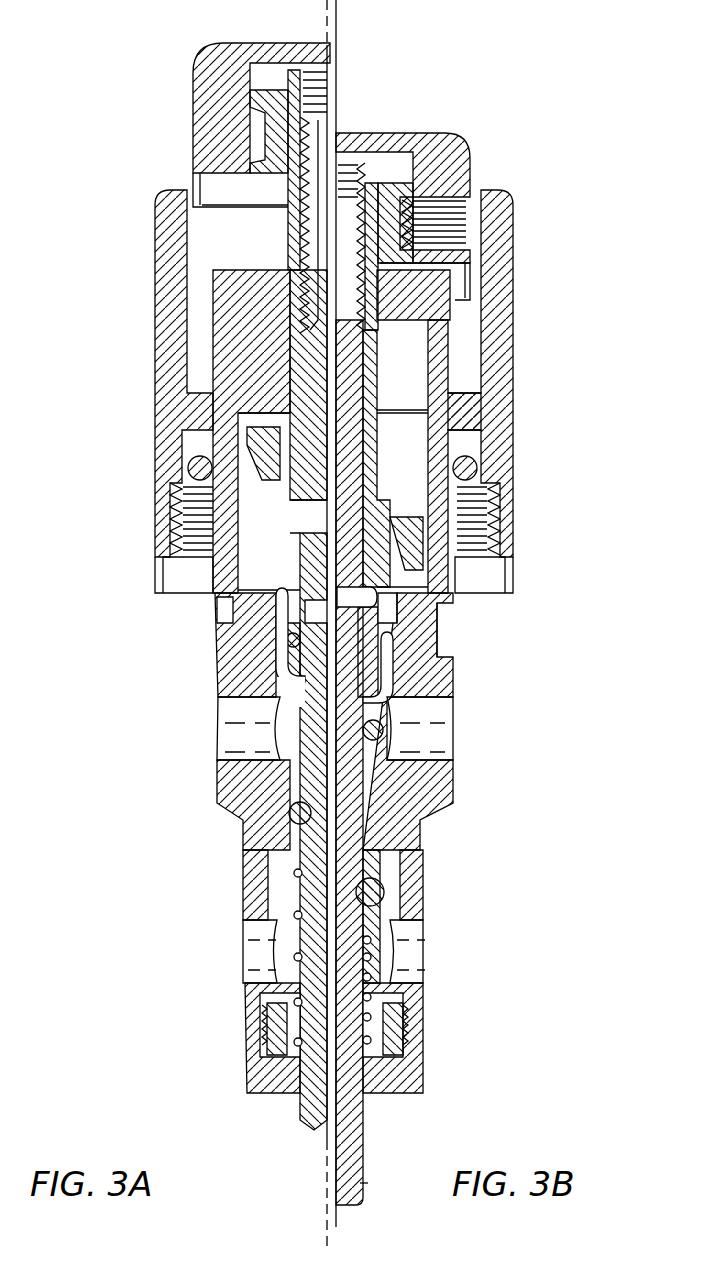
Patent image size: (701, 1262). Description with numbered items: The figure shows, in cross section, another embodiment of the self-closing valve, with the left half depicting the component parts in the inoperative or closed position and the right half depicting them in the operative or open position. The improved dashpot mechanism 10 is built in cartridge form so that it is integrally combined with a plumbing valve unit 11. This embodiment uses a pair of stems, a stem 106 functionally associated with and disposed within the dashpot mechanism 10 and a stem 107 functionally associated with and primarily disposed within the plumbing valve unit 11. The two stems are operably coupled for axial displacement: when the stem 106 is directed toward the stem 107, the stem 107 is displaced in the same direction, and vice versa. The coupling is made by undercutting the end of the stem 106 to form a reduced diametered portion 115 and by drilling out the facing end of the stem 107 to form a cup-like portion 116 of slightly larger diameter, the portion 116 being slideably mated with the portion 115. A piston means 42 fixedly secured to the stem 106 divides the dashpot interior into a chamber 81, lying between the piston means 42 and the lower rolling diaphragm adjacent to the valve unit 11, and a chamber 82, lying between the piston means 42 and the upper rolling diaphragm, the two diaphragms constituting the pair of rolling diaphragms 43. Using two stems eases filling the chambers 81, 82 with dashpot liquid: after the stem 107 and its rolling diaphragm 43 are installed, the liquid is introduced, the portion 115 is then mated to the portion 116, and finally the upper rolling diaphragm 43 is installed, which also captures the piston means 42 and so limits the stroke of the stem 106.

In FIG. 3B, the dashpot mechanism 10 is at (538, 433).
In FIG. 3B, the plumbing valve unit 11 is at (513, 791).
In FIG. 3B, the piston means 42 is at (390, 500).
In FIG. 3B, the rolling diaphragms 43 is at (387, 637).
In FIG. 3B, the chamber 81 is at (409, 460).
In FIG. 3A, the chamber 82 is at (250, 597).
In FIG. 3A, the stem 106 is at (224, 606).
In FIG. 3B, the stem 107 is at (365, 845).
In FIG. 3A, the reduced diametered portion 115 is at (290, 532).
In FIG. 3B, the cup-like portion 116 is at (380, 723).